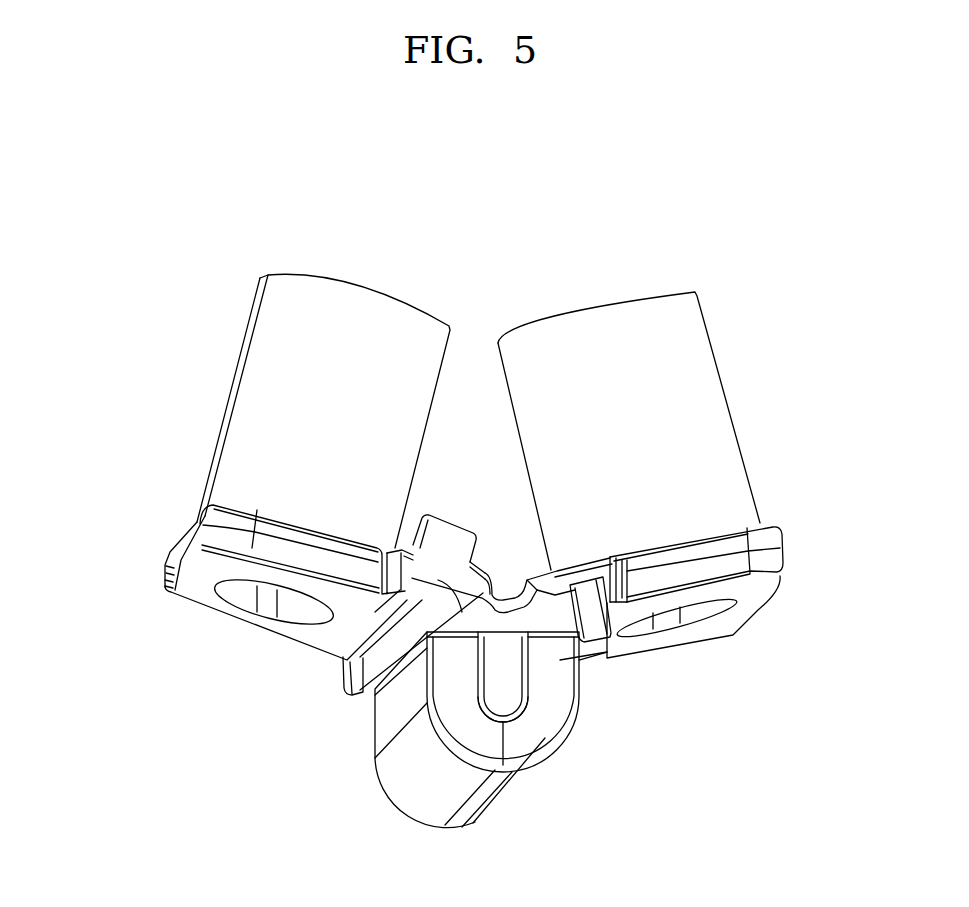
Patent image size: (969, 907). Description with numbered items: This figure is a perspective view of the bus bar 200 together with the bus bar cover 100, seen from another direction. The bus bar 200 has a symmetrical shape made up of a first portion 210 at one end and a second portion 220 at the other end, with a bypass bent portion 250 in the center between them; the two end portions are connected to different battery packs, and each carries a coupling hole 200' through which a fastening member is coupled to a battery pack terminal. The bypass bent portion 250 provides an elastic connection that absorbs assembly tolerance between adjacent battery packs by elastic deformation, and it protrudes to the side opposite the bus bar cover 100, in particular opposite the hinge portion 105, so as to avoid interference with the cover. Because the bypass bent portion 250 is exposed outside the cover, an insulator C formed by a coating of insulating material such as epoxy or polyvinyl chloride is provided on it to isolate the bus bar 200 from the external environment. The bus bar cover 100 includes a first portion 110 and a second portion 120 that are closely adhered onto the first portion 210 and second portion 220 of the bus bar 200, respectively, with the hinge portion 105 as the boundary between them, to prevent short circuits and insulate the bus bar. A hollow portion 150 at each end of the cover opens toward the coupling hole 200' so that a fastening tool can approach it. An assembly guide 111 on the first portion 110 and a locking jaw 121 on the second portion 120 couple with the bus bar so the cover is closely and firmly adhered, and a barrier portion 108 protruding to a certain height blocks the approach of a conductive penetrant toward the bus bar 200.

The bus bar cover 100 is at (168, 431).
The hollow portion 150 is at (322, 295).
The first portion of the bus bar cover 110 is at (194, 526).
The barrier portion 108 is at (445, 526).
The hinge portion 105 is at (504, 592).
The second portion of the bus bar cover 120 is at (780, 556).
The locking jaw 121 is at (594, 634).
The assembly guide 111 is at (340, 670).
The bus bar 200 is at (440, 733).
The first portion of the bus bar 210 is at (198, 596).
The coupling hole 200' is at (271, 643).
The second portion of the bus bar 220 is at (758, 604).
The bypass bent portion 250 is at (420, 805).
The insulator C is at (545, 738).